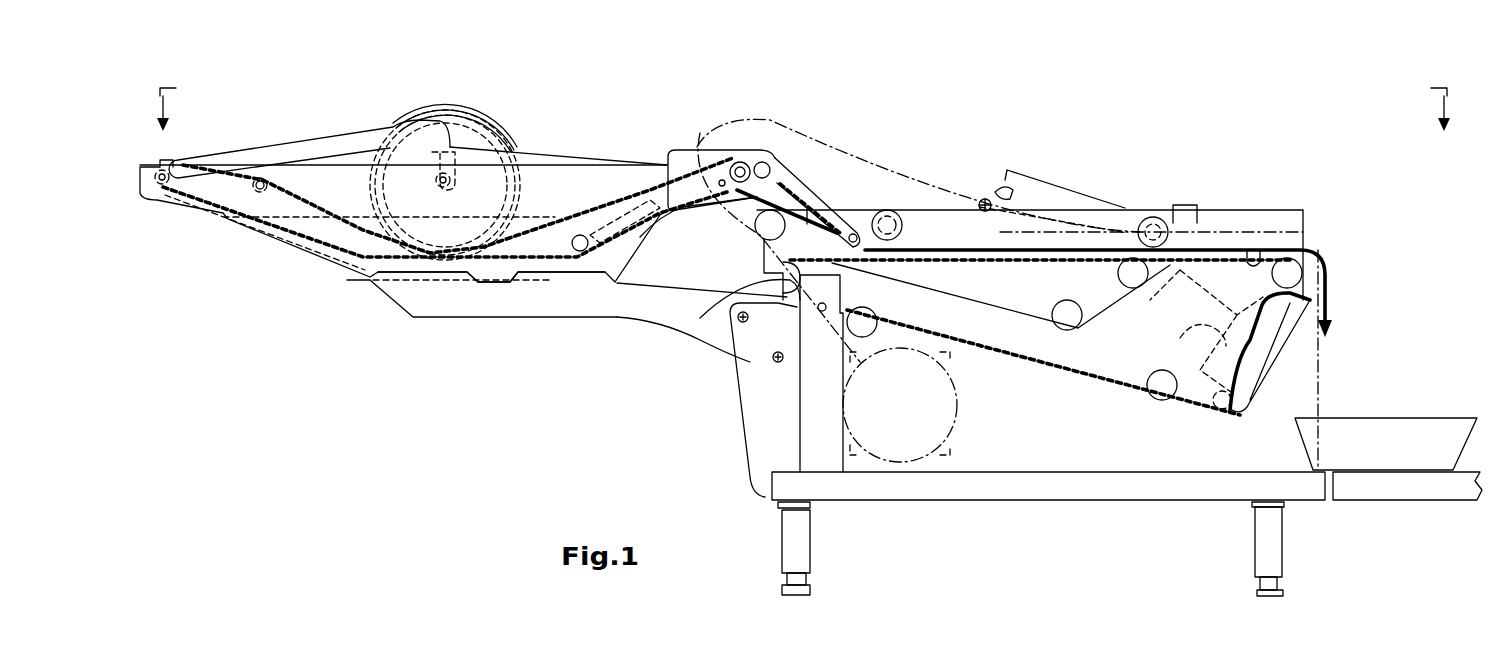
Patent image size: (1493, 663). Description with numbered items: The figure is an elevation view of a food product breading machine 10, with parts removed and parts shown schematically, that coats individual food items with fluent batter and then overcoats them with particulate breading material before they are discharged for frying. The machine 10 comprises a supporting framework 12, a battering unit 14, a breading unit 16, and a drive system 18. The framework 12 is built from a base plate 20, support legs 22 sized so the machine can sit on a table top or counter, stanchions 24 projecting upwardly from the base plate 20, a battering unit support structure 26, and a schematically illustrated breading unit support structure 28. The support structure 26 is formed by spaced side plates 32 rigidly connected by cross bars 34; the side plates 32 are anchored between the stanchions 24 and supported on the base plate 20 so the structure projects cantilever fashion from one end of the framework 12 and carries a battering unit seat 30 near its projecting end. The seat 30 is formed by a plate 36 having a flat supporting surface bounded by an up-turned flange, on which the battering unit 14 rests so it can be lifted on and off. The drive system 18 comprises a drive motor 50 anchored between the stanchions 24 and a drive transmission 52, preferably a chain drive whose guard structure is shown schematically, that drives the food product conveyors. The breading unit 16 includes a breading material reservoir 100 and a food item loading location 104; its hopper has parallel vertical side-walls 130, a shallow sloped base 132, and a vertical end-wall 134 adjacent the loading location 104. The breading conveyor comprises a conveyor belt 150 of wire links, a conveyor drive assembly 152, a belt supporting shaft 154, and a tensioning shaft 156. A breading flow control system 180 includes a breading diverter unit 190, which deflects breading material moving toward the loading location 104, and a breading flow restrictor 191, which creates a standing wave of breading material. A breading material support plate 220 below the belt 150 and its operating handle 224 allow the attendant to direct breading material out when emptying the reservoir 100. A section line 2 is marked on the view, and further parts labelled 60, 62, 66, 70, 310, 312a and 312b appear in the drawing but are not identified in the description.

The section line 2- 2 is at (803, 124).
The food product breading machine 10 is at (1124, 118).
The supporting framework 12 is at (522, 431).
The battering unit 14 is at (288, 262).
The breading unit 16 is at (1174, 410).
The drive system 18 is at (962, 432).
The base plate 20 is at (1067, 490).
The support legs 22 is at (797, 537).
The stanchions 24 is at (820, 440).
The battering unit support structure 26 is at (621, 307).
The breading unit support structure 28 is at (1318, 356).
The battering unit seat 30 is at (420, 280).
The side plates 32 is at (597, 422).
The cross bars 34 is at (773, 357).
The plate 36 is at (493, 280).
The drive motor 50 is at (910, 403).
The drive transmission 52 is at (794, 128).
The frame module 60 is at (573, 165).
The hinge block 62 is at (684, 158).
The lever arm 66 is at (340, 177).
The rail 70 is at (455, 273).
The breading material reservoir 100 is at (990, 294).
The food item loading location 104 is at (874, 198).
The side-walls 130 is at (1146, 341).
The shallow sloped base 132 is at (1048, 363).
The vertical end-wall 134 is at (760, 258).
The conveyor belt 150 is at (1256, 258).
The conveyor drive assembly 152 is at (1333, 272).
The belt supporting shaft 154 is at (745, 285).
The tensioning shaft 156 is at (1227, 412).
The breading flow control system 180 is at (1133, 200).
The breading diverter unit 190 is at (818, 182).
The breading flow restrictor 191 is at (1038, 195).
The breading material support plate 220 is at (1189, 344).
The operating handle 224 is at (1212, 270).
The pivot 310 is at (980, 199).
The clamp part 312a is at (984, 194).
The clamp part 312b is at (1008, 185).